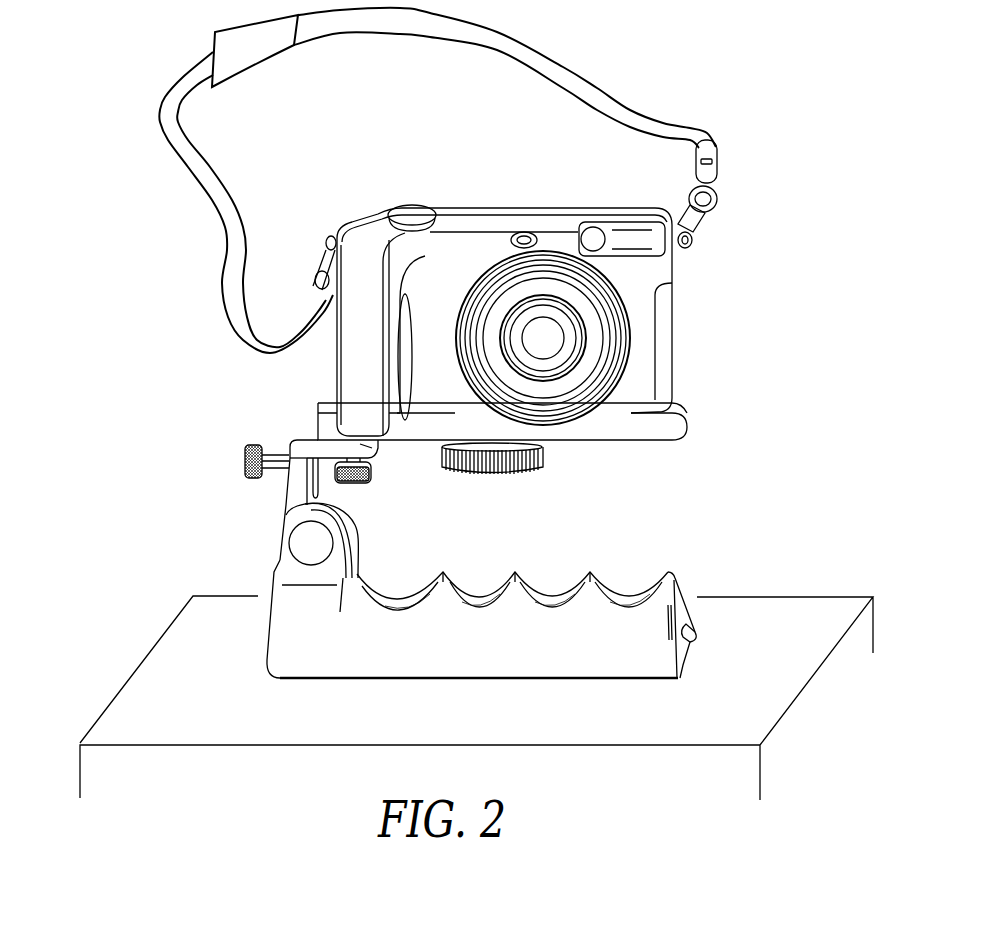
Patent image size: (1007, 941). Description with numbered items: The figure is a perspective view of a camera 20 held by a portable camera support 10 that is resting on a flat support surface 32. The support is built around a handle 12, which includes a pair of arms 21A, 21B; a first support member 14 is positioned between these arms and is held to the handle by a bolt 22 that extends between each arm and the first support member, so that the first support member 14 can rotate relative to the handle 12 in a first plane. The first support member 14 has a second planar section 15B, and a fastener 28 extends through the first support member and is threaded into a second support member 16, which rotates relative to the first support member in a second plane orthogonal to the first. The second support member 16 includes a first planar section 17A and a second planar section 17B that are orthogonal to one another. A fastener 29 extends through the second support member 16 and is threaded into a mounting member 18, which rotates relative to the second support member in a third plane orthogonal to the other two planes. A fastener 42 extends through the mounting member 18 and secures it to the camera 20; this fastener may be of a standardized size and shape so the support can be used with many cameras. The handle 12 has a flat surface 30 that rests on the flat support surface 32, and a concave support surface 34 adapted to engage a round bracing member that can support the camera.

The portable camera support 10 is at (200, 493).
The handle 12 is at (498, 637).
The first support member 14 is at (284, 492).
The second planar section 15B is at (290, 440).
The second support member 16 is at (314, 438).
The first planar section 17A is at (302, 488).
The second planar section 17B is at (373, 448).
The mounting member 18 is at (676, 428).
The camera 20 is at (658, 345).
The arm 21A is at (324, 544).
The arm 21B is at (282, 572).
The bolt 22 is at (295, 541).
The fastener 28 is at (244, 462).
The fastener 29 is at (372, 472).
The flat surface 30 is at (680, 674).
The flat support surface 32 is at (783, 604).
The concave support surface 34 is at (697, 633).
The fastener 42 is at (546, 455).